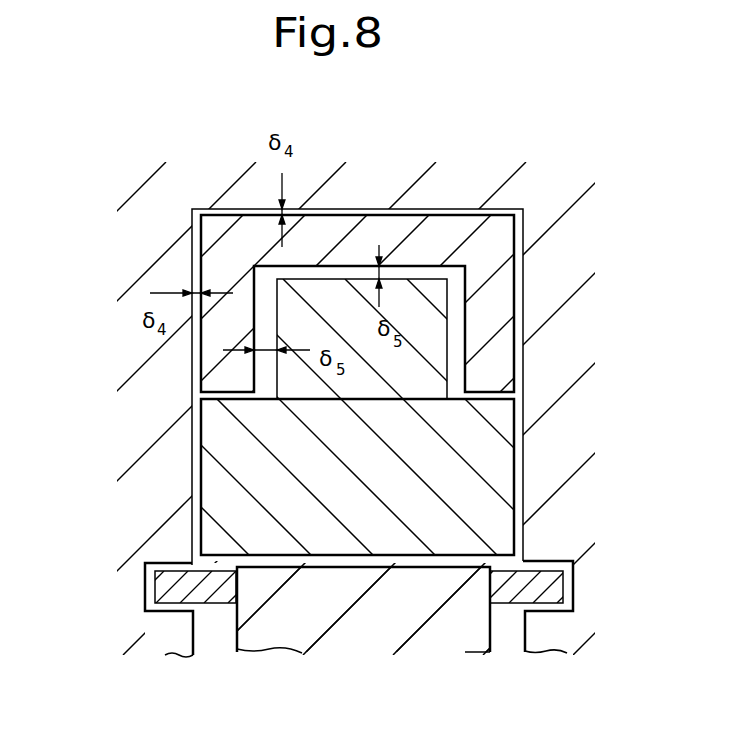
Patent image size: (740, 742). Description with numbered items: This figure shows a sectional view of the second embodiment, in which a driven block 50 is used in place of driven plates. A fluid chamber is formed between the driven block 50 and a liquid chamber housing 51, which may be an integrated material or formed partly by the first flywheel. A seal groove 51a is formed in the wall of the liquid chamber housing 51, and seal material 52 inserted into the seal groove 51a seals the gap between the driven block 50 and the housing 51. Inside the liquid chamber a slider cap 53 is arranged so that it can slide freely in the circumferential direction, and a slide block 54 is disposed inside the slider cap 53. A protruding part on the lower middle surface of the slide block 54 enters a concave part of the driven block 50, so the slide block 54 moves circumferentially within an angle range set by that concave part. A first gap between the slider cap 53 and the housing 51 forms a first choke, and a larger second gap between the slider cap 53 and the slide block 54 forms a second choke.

The driven block 50 is at (480, 632).
The liquid chamber housing 51 is at (557, 240).
The seal groove 51a is at (170, 605).
The seal material 52 is at (157, 568).
The slider cap 53 is at (500, 297).
The slide block 54 is at (520, 452).